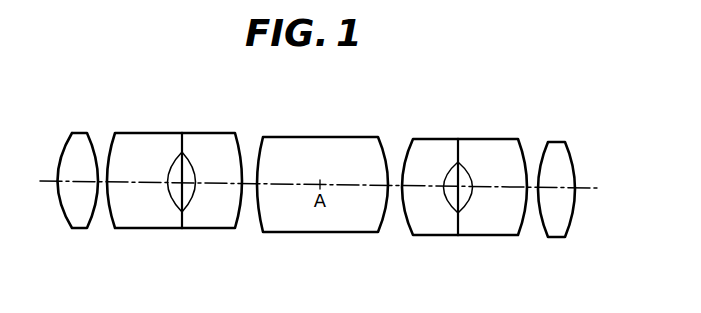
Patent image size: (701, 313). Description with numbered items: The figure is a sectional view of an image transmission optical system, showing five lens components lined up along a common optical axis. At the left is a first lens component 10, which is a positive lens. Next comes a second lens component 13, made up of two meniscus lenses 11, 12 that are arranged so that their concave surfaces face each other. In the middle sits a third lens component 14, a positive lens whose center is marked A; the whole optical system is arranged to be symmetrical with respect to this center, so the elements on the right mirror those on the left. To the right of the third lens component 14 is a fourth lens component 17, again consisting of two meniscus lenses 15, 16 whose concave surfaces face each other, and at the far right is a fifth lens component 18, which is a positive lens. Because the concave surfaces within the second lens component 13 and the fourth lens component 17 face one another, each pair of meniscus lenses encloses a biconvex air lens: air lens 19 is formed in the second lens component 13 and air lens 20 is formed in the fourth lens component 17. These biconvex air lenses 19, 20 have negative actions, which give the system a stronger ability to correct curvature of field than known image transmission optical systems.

The first lens component 10 is at (82, 133).
The meniscus lens 11 is at (148, 138).
The meniscus lens 12 is at (220, 138).
The second lens component 13 is at (125, 94).
The third lens component 14 is at (322, 138).
The meniscus lens 15 is at (440, 152).
The meniscus lens 16 is at (498, 150).
The fourth lens component 17 is at (418, 99).
The fifth lens component 18 is at (558, 153).
The biconvex air lens 19 is at (178, 198).
The biconvex air lens 20 is at (455, 203).